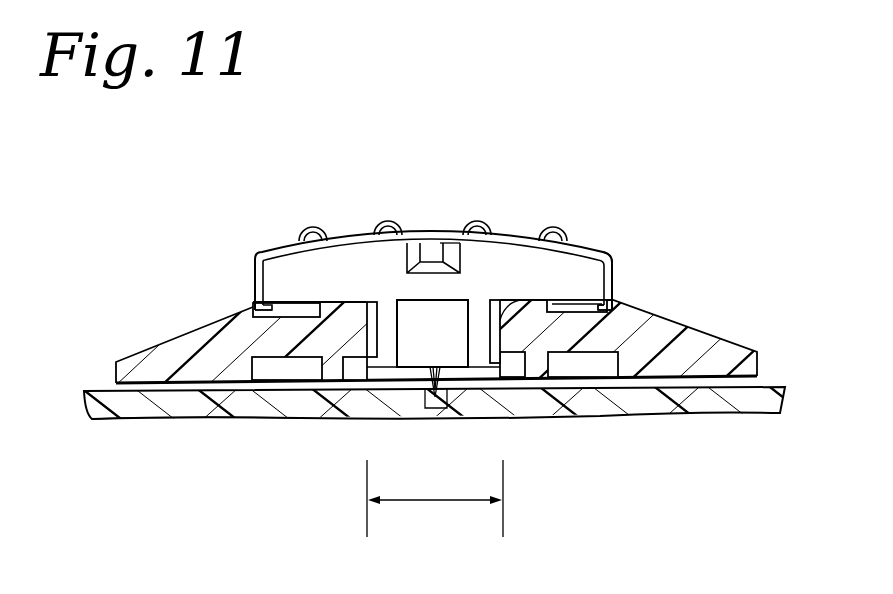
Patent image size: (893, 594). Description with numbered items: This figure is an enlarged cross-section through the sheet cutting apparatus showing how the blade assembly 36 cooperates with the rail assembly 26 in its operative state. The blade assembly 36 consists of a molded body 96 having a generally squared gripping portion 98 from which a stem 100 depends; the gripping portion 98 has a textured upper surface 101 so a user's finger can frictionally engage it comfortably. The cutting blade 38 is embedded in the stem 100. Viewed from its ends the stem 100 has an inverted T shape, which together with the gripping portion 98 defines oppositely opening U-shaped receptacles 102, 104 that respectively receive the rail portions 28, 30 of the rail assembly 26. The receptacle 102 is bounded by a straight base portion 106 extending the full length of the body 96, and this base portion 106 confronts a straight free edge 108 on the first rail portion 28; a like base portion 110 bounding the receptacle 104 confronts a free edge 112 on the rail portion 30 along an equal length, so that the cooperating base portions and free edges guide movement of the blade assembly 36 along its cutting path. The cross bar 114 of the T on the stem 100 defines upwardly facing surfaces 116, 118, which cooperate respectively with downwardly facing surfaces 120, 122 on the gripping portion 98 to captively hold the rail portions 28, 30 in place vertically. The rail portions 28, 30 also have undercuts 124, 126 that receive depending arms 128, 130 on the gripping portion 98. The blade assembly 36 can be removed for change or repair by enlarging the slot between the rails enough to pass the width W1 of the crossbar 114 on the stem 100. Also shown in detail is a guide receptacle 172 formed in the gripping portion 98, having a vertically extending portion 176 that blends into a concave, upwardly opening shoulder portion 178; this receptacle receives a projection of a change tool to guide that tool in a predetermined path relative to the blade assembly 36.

The rail assembly 26 is at (694, 322).
The first rail portion 28 is at (262, 363).
The rail portion 30 is at (600, 392).
The blade assembly 36 is at (522, 318).
The cutting blade 38 is at (440, 386).
The molded body 96 is at (612, 254).
The gripping portion 98 is at (367, 234).
The stem 100 is at (372, 332).
The textured upper surface 101 is at (412, 222).
The U-shaped receptacle 102 is at (312, 305).
The U-shaped receptacle 104 is at (552, 304).
The base portion 106 is at (352, 300).
The free edge 108 is at (521, 256).
The base portion 110 is at (603, 247).
The free edge 112 is at (527, 352).
The cross bar 114 is at (392, 328).
The upwardly facing surface 116 is at (273, 318).
The upwardly facing surface 118 is at (560, 356).
The downwardly facing surface 120 is at (253, 302).
The downwardly facing surface 122 is at (502, 318).
The undercut 124 is at (272, 303).
The undercut 126 is at (614, 301).
The depending arm 128 is at (255, 392).
The depending arm 130 is at (760, 380).
The guide receptacle 172 is at (422, 246).
The vertically extending portion 176 is at (450, 250).
The shoulder portion 178 is at (468, 300).
The width of the crossbar W1 is at (440, 503).